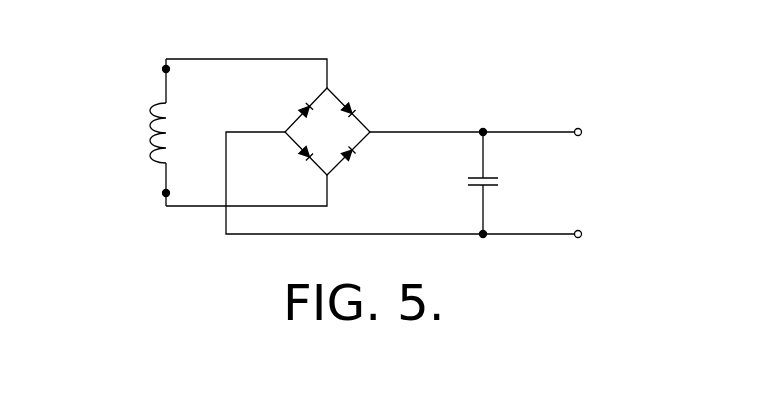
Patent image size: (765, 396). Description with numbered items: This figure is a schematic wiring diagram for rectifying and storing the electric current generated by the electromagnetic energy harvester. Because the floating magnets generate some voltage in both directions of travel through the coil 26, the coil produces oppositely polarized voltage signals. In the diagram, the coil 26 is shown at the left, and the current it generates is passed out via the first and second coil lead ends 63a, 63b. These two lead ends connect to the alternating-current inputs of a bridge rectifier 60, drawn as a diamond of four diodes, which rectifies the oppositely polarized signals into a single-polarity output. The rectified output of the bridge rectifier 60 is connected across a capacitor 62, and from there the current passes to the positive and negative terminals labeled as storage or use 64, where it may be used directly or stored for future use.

The first coil lead end 63a is at (164, 67).
The coil 26 is at (152, 124).
The second coil lead end 63b is at (163, 195).
The bridge rectifier 60 is at (357, 97).
The capacitor 62 is at (489, 176).
The storage or use 64 is at (637, 184).